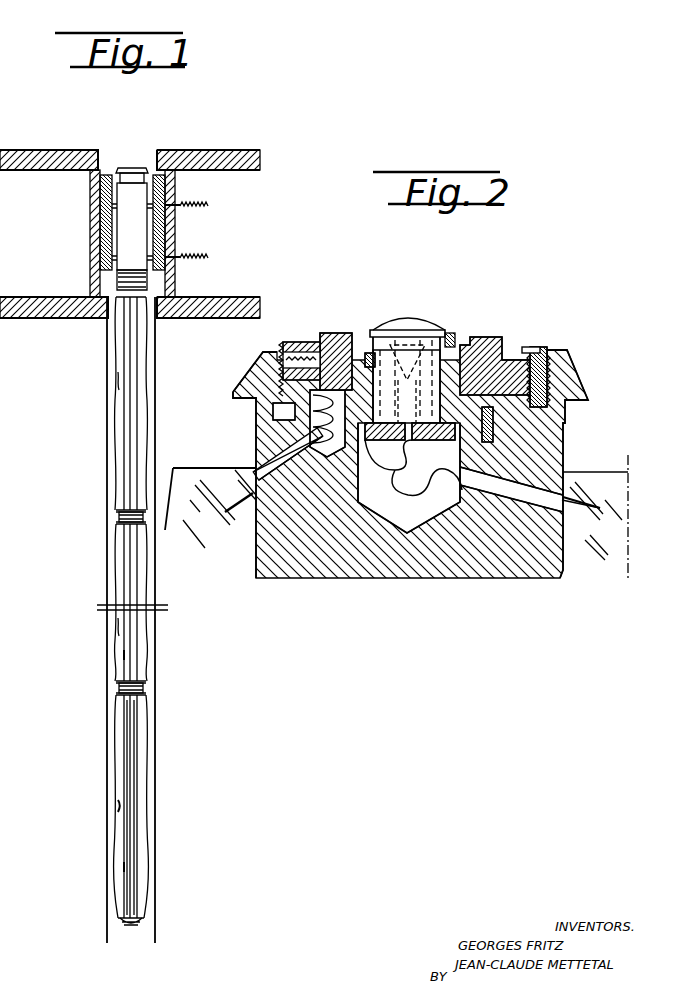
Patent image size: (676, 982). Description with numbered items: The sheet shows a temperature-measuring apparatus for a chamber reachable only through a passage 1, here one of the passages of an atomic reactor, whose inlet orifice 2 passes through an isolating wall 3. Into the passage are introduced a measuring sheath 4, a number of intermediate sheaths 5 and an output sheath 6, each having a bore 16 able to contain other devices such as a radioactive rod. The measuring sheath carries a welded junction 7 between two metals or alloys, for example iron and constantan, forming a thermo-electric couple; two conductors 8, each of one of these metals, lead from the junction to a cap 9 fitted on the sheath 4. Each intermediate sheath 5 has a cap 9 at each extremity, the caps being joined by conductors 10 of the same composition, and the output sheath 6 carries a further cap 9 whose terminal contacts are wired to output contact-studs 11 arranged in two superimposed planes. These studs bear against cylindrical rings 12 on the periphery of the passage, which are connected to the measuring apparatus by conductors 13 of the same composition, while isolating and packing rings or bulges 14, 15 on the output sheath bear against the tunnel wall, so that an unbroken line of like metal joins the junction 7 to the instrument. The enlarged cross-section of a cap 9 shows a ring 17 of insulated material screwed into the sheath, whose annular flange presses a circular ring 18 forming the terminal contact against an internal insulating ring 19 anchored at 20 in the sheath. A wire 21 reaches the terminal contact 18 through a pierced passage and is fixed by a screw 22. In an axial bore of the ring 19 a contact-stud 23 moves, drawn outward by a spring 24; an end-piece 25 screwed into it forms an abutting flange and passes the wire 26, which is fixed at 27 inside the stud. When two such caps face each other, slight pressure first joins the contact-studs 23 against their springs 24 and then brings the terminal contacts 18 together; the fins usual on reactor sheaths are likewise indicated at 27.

In FIG. 1, the passage 1 is at (104, 893).
In FIG. 1, the inlet orifice 2 is at (121, 160).
In FIG. 1, the isolating wall 3 is at (40, 237).
In FIG. 1, the measuring sheath 4 is at (138, 787).
In FIG. 1, the intermediate sheath 5 is at (118, 438).
In FIG. 1, the output sheath 6 is at (132, 229).
In FIG. 1, the welded junction 7 is at (118, 806).
In FIG. 1, the conductors 8 is at (118, 740).
In FIG. 1, the cap 9 is at (92, 284).
In FIG. 2, the cap 9 is at (238, 392).
In FIG. 1, the conductors 10 is at (124, 379).
In FIG. 1, the output contact-studs 11 is at (176, 218).
In FIG. 1, the cylindrical rings 12 is at (92, 207).
In FIG. 1, the conductors 13 is at (208, 203).
In FIG. 1, the isolating and packing ring 14 is at (182, 153).
In FIG. 1, the isolating and packing ring 15 is at (159, 270).
In FIG. 1, the bore 16 is at (128, 652).
In FIG. 2, the ring of insulated material 17 is at (540, 348).
In FIG. 2, the circular ring forming a terminal contact 18 is at (488, 357).
In FIG. 2, the internal ring 19 is at (455, 440).
In FIG. 2, the anchoring 20 is at (490, 442).
In FIG. 2, the wire 21 is at (229, 505).
In FIG. 2, the screw 22 is at (309, 338).
In FIG. 2, the contact-stud 23 is at (407, 320).
In FIG. 2, the spring 24 is at (369, 353).
In FIG. 2, the end-piece 25 is at (428, 442).
In FIG. 2, the wire 26 is at (588, 500).
In FIG. 2, the fixation point / fins 27 is at (196, 481).